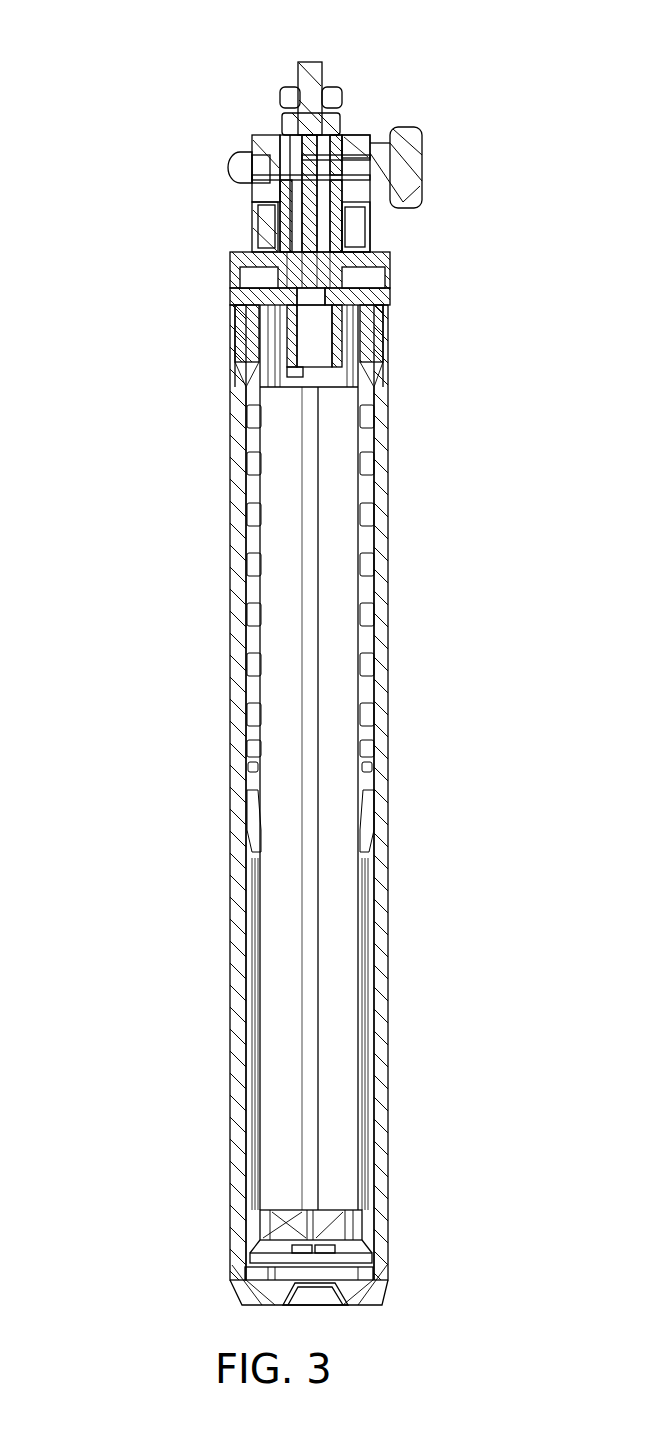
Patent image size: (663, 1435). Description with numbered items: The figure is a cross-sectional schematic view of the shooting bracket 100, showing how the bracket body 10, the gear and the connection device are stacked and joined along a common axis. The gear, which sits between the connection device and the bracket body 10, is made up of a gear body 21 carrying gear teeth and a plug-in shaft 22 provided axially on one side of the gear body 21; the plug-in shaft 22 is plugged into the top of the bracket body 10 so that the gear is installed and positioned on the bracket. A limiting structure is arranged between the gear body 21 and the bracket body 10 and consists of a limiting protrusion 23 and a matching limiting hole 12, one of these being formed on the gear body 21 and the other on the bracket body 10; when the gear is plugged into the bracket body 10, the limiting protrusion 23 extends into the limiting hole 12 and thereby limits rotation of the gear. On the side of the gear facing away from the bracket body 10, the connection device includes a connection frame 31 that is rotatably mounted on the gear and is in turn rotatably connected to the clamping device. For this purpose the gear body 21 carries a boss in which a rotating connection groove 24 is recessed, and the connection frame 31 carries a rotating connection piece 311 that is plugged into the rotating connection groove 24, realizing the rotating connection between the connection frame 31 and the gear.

The shooting bracket 100 is at (103, 49).
The bracket body 10 is at (238, 425).
The limiting hole 12 is at (385, 345).
The gear body 21 is at (385, 267).
The plug-in shaft 22 is at (240, 312).
The limiting protrusion 23 is at (385, 312).
The rotating connection groove 24 is at (405, 207).
The connection frame 31 is at (240, 262).
The rotating connection piece 311 is at (252, 210).